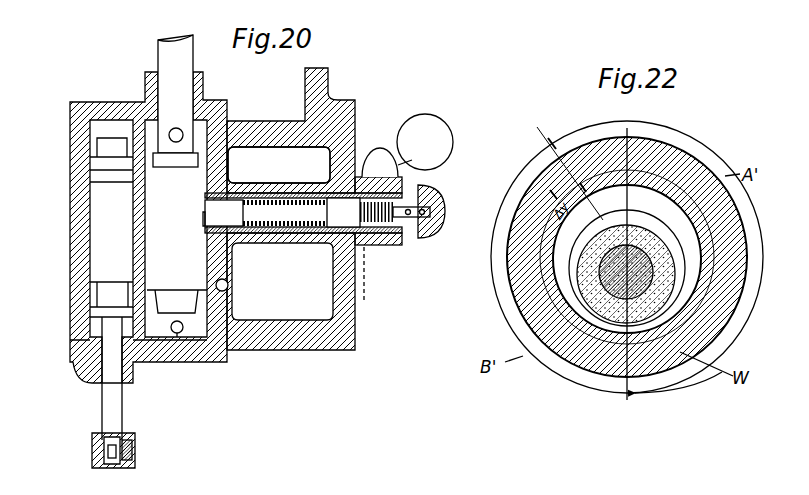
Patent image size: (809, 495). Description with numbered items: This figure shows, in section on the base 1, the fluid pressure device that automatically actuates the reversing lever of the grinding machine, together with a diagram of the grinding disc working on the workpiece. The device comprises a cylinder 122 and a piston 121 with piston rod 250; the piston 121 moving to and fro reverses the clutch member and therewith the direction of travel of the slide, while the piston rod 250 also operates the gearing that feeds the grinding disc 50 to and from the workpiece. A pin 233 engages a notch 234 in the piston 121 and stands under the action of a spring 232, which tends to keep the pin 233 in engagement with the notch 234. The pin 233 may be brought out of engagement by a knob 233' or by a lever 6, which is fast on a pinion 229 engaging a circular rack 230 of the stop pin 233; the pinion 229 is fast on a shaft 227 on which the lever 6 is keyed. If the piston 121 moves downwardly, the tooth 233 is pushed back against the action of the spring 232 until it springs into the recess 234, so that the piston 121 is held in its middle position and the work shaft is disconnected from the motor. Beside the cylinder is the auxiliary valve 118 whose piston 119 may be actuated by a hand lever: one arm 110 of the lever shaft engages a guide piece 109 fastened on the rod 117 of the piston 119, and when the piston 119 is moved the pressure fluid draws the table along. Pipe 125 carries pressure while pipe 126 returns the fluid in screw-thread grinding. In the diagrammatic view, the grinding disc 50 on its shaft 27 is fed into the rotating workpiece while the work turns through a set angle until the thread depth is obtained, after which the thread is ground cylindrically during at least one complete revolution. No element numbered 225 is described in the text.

In FIG. 20, the base 1 is at (330, 78).
In FIG. 20, the lever 6 is at (382, 150).
In FIG. 22, the grinding disc shaft 27 is at (614, 287).
In FIG. 22, the grinding disc 50 is at (588, 289).
In FIG. 20, the guide piece 109 is at (93, 452).
In FIG. 20, the arm 110 is at (138, 448).
In FIG. 20, the rod 117 is at (110, 413).
In FIG. 20, the auxiliary valve 118 is at (78, 275).
In FIG. 20, the piston 119 is at (104, 196).
In FIG. 20, the piston 121 is at (165, 248).
In FIG. 20, the cylinder 122 is at (200, 337).
In FIG. 20, the pipe 125 is at (172, 128).
In FIG. 20, the pipe 126 is at (177, 334).
In FIG. 20, the upper guide block 225 is at (404, 192).
In FIG. 20, the shaft 227 is at (382, 246).
In FIG. 20, the pinion 229 is at (378, 283).
In FIG. 20, the circular rack 230 is at (395, 232).
In FIG. 20, the spring 232 is at (285, 195).
In FIG. 20, the pin 233 is at (291, 282).
In FIG. 20, the knob 233' is at (436, 218).
In FIG. 20, the notch 234 is at (204, 220).
In FIG. 20, the piston rod 250 is at (165, 58).